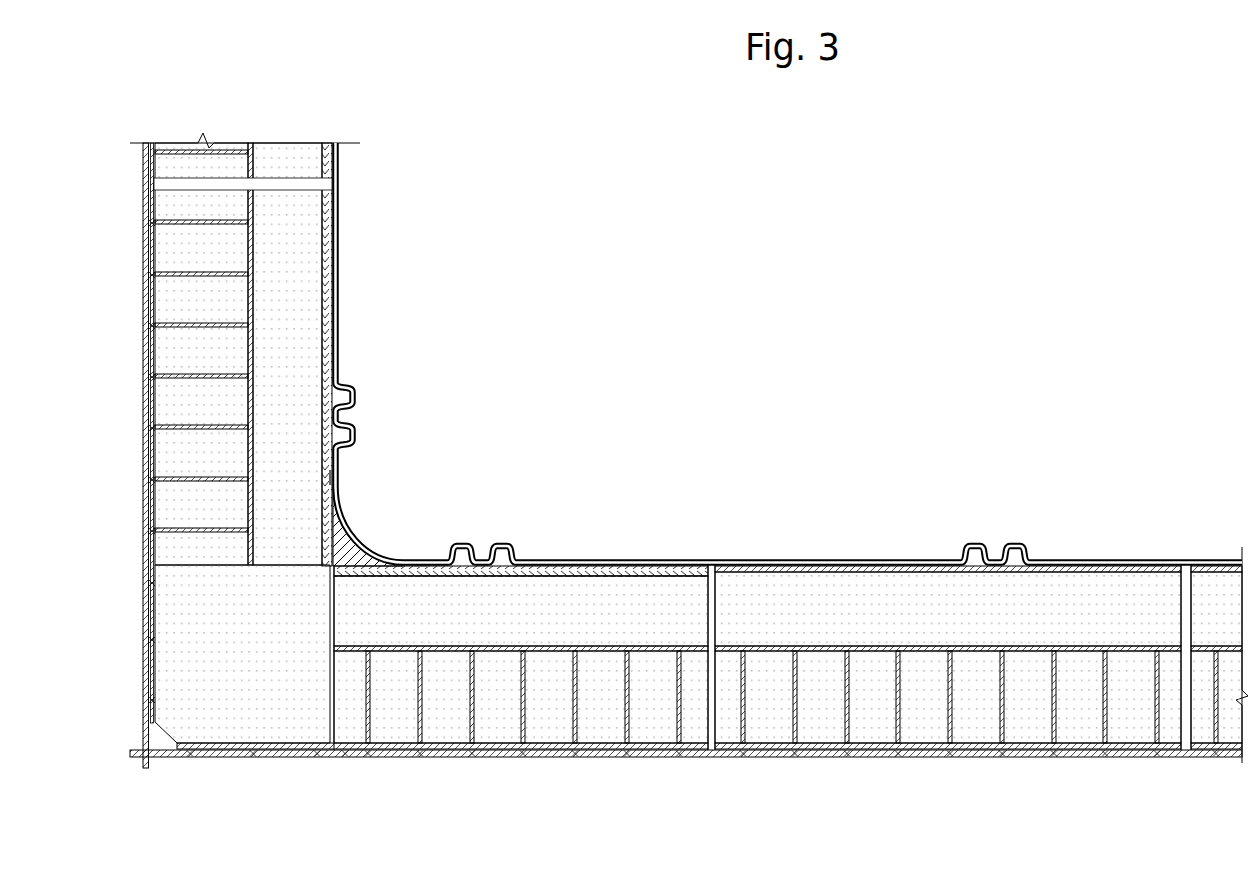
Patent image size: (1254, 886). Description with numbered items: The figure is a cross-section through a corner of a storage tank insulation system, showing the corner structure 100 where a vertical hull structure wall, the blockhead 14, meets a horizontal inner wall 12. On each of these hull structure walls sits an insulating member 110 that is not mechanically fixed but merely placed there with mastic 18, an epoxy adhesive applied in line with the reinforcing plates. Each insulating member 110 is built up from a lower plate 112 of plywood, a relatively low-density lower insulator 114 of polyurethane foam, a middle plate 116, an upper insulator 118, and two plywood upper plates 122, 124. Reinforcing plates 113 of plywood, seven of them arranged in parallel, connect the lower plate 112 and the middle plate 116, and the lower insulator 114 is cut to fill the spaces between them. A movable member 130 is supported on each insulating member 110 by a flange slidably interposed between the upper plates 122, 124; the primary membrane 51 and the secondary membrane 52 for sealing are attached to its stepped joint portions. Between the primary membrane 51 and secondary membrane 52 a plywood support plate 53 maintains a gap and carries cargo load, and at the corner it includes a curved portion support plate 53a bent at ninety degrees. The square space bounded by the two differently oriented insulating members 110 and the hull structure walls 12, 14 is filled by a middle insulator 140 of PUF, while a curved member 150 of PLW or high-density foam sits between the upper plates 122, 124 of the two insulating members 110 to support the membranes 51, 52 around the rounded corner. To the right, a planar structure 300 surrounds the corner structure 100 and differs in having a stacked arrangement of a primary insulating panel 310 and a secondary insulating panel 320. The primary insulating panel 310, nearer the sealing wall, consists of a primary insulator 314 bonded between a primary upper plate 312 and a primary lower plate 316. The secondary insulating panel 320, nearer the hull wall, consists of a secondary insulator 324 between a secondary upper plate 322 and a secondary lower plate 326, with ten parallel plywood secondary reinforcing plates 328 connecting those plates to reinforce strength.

The corner structure 100 is at (651, 509).
The insulating member 110 is at (381, 501).
The blockhead 14 is at (146, 445).
The inner wall 12 is at (715, 756).
The primary membrane 51 is at (340, 263).
The secondary membrane 52 is at (340, 230).
The support plate 53 is at (393, 524).
The curved portion support plate 53a is at (341, 518).
The movable member 130 is at (340, 478).
The curved member 150 is at (365, 560).
The middle insulator 140 is at (234, 725).
The upper insulator 118 is at (548, 605).
The upper plate 124 is at (612, 571).
The upper plate 122 is at (684, 573).
The middle plate 116 is at (550, 651).
The lower insulator 114 is at (437, 725).
The reinforcing plate 113 is at (488, 725).
The lower plate 112 is at (375, 746).
The mastic 18 is at (626, 725).
The planar structure 300 is at (978, 675).
The primary insulating panel 310 is at (978, 558).
The primary upper plate 312 is at (910, 568).
The primary insulator 314 is at (764, 590).
The primary lower plate 316 is at (831, 647).
The secondary insulating panel 320 is at (978, 741).
The secondary upper plate 322 is at (912, 651).
The secondary insulator 324 is at (834, 725).
The secondary lower plate 326 is at (770, 749).
The secondary reinforcing plate 328 is at (1060, 725).